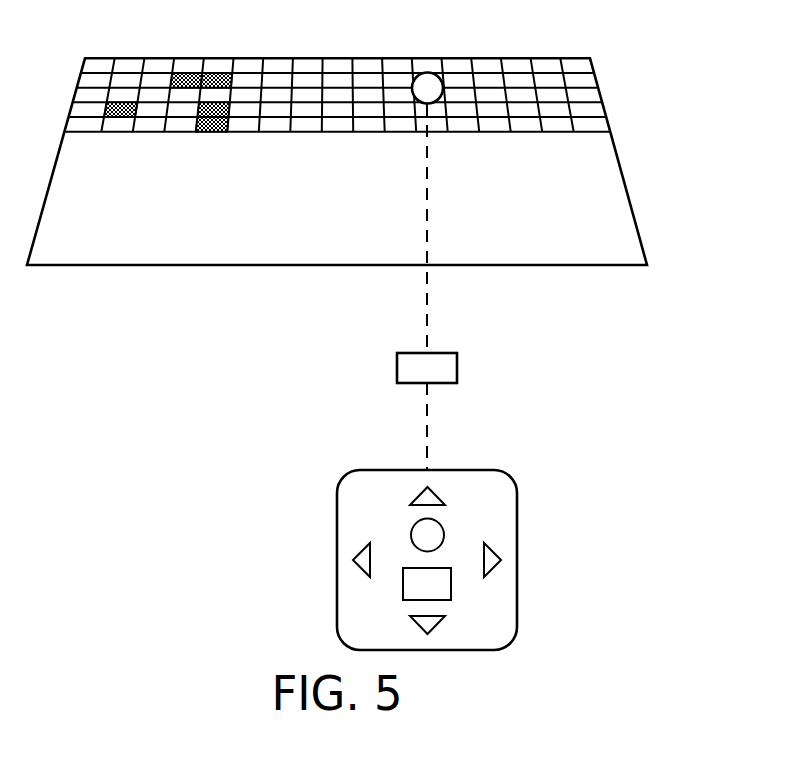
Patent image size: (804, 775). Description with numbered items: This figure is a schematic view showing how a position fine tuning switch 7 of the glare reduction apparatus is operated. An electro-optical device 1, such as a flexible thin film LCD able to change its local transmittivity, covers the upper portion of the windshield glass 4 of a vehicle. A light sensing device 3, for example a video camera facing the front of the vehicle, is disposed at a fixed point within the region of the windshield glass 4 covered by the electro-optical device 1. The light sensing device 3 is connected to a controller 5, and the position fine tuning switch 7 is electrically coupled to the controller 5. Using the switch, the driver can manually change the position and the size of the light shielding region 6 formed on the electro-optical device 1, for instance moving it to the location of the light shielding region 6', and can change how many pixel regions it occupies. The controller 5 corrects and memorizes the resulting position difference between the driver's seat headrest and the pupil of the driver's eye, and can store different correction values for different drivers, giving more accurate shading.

The electro-optical device 1 is at (574, 96).
The light sensing device 3 is at (427, 80).
The windshield glass 4 is at (613, 192).
The controller 5 is at (457, 367).
The light shielding region 6 is at (201, 46).
The light shielding region 6' is at (122, 61).
The position fine tuning switch 7 is at (517, 558).